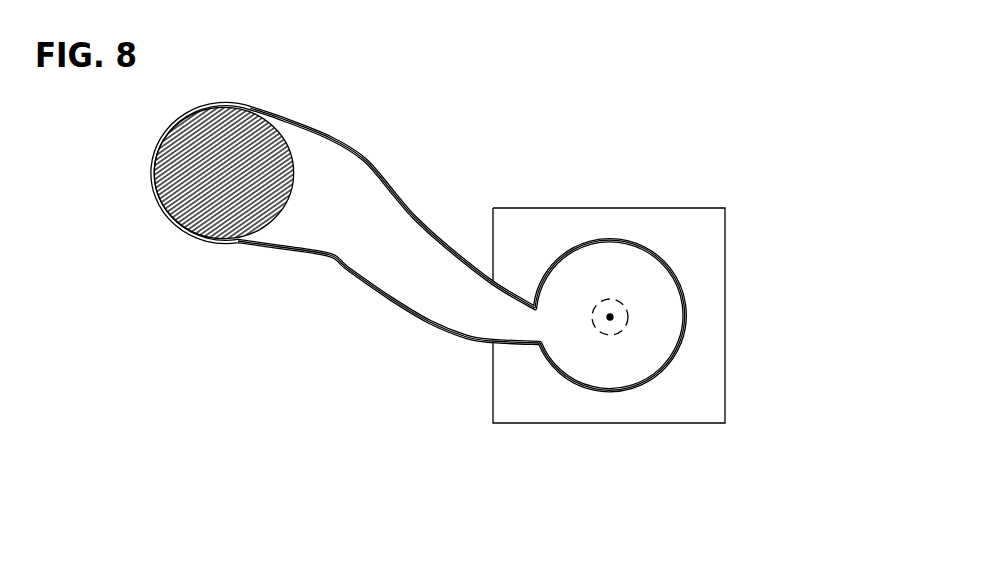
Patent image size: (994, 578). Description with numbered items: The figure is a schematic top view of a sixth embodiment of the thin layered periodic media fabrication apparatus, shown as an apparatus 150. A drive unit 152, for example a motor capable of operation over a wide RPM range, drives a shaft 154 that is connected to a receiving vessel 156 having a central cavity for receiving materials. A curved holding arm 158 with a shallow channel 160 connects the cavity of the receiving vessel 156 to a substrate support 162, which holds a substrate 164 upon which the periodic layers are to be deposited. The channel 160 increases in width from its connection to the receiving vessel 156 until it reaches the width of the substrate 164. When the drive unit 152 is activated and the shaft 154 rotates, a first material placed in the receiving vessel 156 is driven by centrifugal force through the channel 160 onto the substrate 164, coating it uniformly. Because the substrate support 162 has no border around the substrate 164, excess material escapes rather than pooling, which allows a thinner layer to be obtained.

The apparatus 150 is at (533, 103).
The drive unit 152 is at (727, 385).
The shaft 154 is at (610, 317).
The receiving vessel 156 is at (608, 245).
The curved holding arm 158 is at (418, 270).
The channel 160 is at (358, 157).
The substrate support 162 is at (205, 248).
The substrate 164 is at (228, 140).